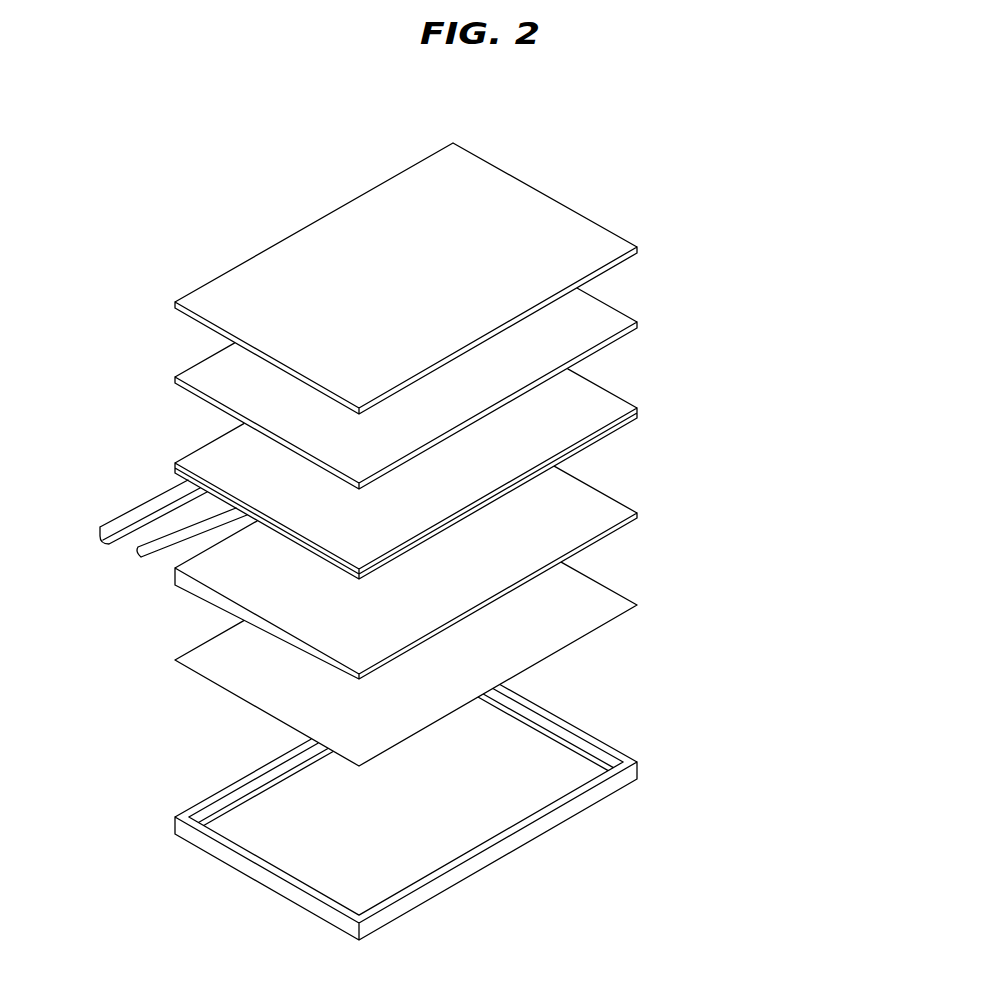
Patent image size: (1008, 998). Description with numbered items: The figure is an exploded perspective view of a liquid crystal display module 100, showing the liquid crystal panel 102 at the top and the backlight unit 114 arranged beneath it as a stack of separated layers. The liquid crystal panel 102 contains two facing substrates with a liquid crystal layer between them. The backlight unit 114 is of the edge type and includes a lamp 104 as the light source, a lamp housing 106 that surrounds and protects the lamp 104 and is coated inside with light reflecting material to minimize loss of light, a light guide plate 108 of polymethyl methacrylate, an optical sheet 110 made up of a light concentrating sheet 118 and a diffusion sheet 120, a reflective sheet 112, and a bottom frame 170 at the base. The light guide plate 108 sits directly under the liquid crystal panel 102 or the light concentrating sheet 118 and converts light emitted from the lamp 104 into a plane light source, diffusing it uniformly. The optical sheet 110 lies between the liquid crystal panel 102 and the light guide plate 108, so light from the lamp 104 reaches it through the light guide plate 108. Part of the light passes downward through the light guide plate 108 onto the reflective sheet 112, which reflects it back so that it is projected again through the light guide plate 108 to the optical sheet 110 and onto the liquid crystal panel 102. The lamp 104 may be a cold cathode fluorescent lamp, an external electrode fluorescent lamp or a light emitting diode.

The liquid crystal display module 100 is at (705, 198).
The liquid crystal panel 102 is at (267, 278).
The lamp 104 is at (152, 550).
The lamp housing 106 is at (118, 522).
The light guide plate 108 is at (610, 512).
The optical sheet 110 is at (499, 433).
The reflective sheet 112 is at (610, 607).
The backlight unit 114 is at (536, 648).
The light concentrating sheet 118 is at (657, 414).
The diffusion sheet 120 is at (638, 324).
The bottom frame 170 is at (493, 812).